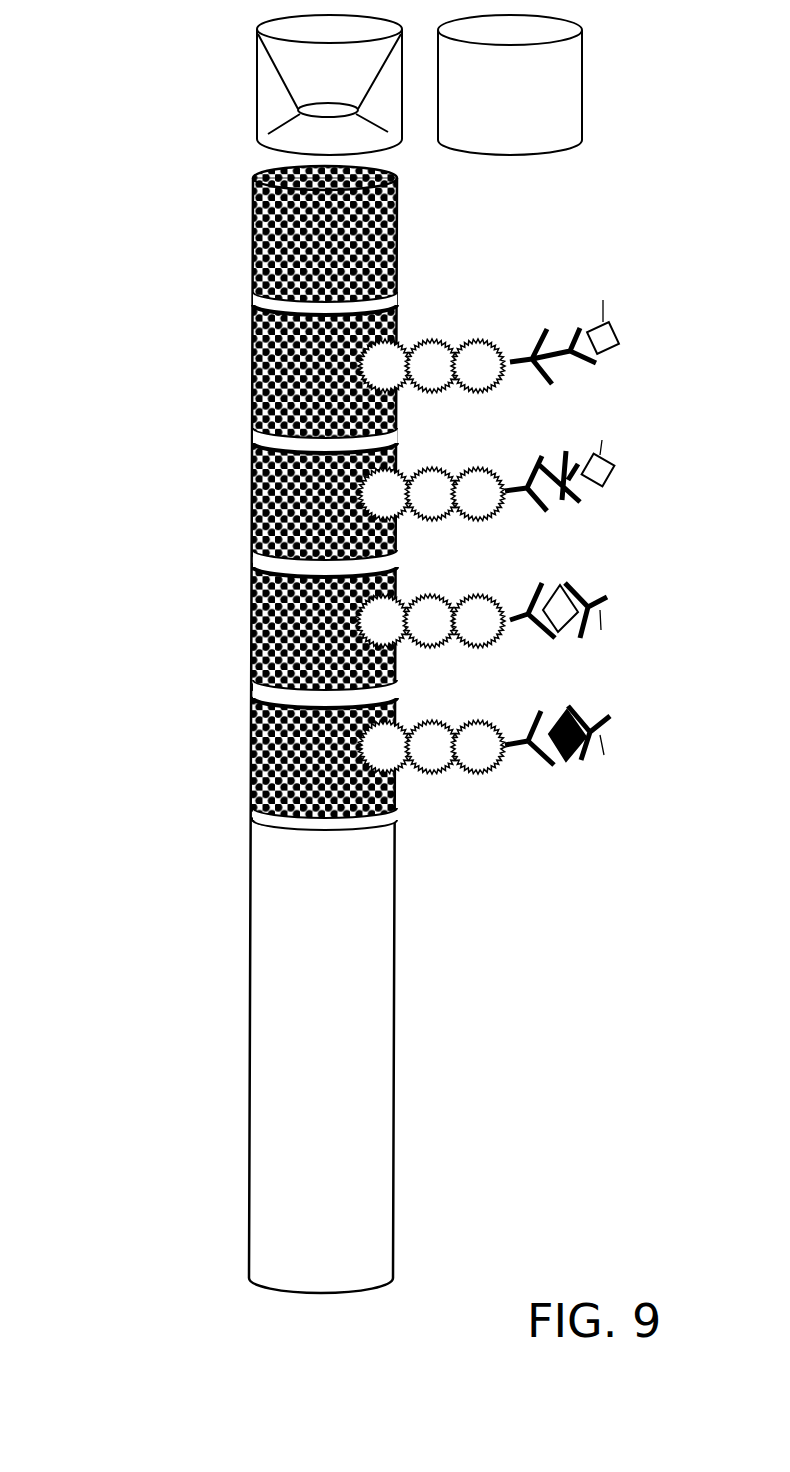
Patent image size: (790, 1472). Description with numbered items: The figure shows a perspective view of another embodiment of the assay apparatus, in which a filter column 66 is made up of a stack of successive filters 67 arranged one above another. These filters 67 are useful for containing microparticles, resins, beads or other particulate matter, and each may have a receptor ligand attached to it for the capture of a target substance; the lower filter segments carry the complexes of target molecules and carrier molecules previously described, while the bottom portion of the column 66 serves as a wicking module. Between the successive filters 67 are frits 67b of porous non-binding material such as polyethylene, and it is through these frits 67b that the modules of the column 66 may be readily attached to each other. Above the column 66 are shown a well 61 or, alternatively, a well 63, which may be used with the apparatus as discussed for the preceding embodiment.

The well 61 is at (257, 38).
The well 63 is at (557, 97).
The filter column 66 is at (377, 726).
The successive filters 67 is at (289, 495).
The frits 67b is at (250, 304).